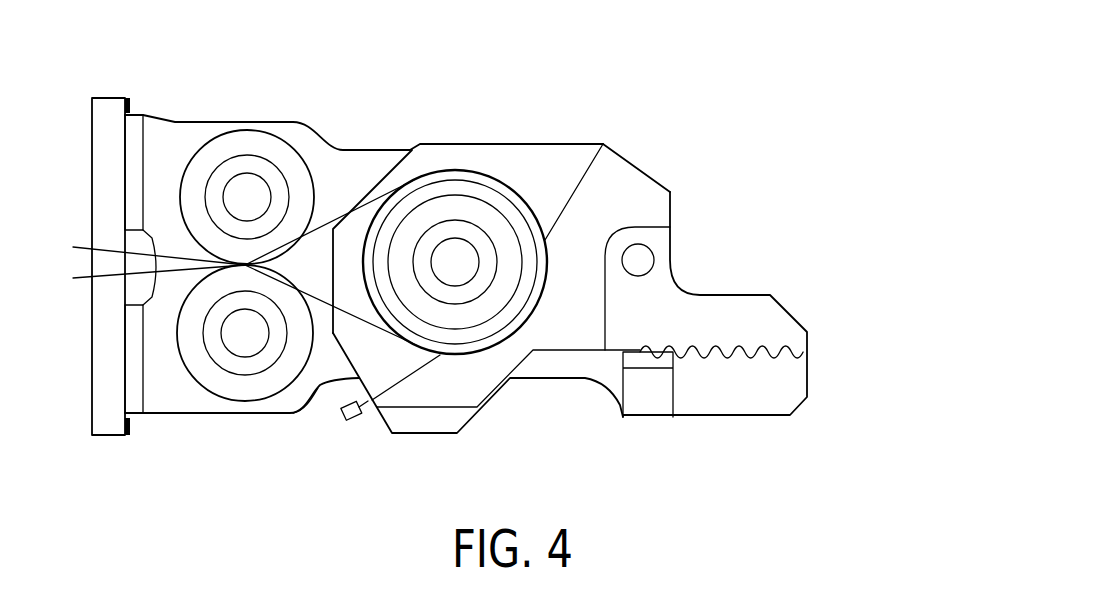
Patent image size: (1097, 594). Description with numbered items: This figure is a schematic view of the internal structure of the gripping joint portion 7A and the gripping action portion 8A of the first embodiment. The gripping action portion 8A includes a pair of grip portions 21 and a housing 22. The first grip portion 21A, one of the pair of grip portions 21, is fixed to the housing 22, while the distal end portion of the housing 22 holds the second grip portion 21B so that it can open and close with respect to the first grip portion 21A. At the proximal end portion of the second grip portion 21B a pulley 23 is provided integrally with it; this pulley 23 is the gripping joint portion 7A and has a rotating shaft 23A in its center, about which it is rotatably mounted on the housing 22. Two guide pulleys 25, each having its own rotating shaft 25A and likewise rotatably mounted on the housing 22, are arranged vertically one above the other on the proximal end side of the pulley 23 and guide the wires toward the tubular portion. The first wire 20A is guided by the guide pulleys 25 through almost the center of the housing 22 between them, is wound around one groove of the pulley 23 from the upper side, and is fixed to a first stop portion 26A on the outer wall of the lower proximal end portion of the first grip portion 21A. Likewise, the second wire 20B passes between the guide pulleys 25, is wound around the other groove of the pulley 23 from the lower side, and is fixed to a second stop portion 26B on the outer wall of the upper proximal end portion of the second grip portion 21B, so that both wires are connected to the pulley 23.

The gripping action portion 8A is at (725, 95).
The first wire 20A is at (338, 217).
The second wire 20B is at (157, 262).
The grip portions 21 is at (882, 303).
The first grip portion 21A is at (770, 393).
The second grip portion 21B is at (770, 330).
The housing 22 is at (318, 373).
The pulley 23 is at (452, 197).
The gripping joint portion 7A is at (455, 262).
The rotating shaft 23A is at (449, 273).
The guide pulleys 25 is at (242, 142).
The rotating shaft 25A is at (233, 190).
The first stop portion 26A is at (377, 418).
The second stop portion 26B is at (603, 143).